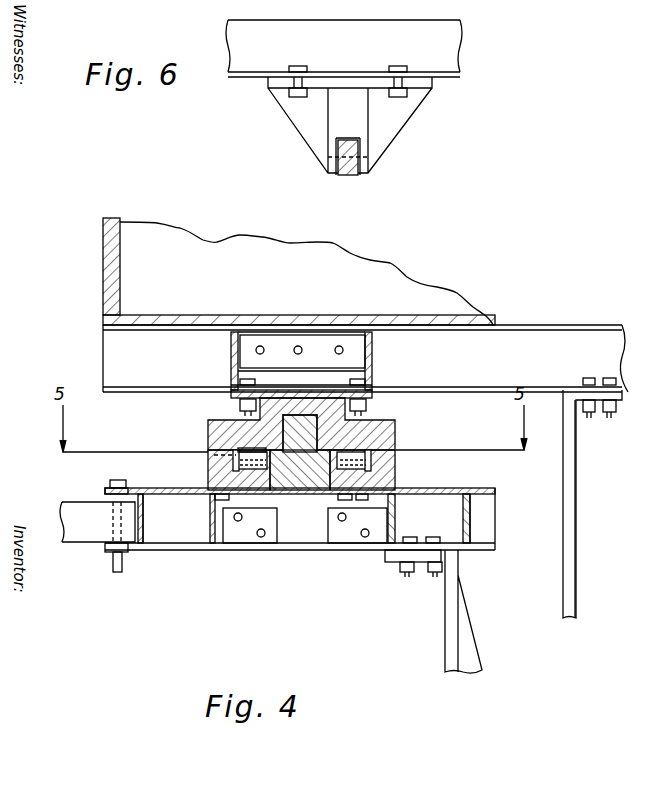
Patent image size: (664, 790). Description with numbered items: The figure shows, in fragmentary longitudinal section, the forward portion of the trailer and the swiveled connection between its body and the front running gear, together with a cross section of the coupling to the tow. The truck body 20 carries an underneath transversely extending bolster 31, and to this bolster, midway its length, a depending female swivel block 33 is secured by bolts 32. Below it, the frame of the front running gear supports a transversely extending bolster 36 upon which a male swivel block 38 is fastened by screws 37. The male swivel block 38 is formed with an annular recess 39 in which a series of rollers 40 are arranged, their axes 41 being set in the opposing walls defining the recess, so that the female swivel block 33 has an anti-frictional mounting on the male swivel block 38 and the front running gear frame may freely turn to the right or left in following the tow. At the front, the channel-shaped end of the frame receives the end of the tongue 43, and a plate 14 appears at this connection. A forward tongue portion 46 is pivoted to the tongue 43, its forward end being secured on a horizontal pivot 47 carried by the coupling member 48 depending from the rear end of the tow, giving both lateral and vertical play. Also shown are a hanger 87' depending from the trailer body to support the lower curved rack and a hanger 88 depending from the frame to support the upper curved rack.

In FIG. 4, the plate 14 is at (110, 484).
In FIG. 4, the truck body 20 is at (299, 271).
In FIG. 4, the bolster 31 is at (372, 352).
In FIG. 4, the bolts 32 is at (230, 375).
In FIG. 4, the female swivel block 33 is at (396, 424).
In FIG. 4, the bolster 36 is at (305, 500).
In FIG. 4, the screws 37 is at (215, 500).
In FIG. 4, the male swivel block 38 is at (396, 484).
In FIG. 4, the annular recess 39 is at (372, 465).
In FIG. 4, the rollers 40 is at (232, 450).
In FIG. 4, the axes 41 is at (214, 472).
In FIG. 4, the tongue 43 is at (95, 540).
In FIG. 6, the forward tongue portion 46 is at (412, 192).
In FIG. 6, the horizontal pivot 47 is at (360, 163).
In FIG. 6, the coupling member 48 is at (387, 132).
In FIG. 4, the hanger 87' is at (594, 498).
In FIG. 4, the hanger 88 is at (452, 612).